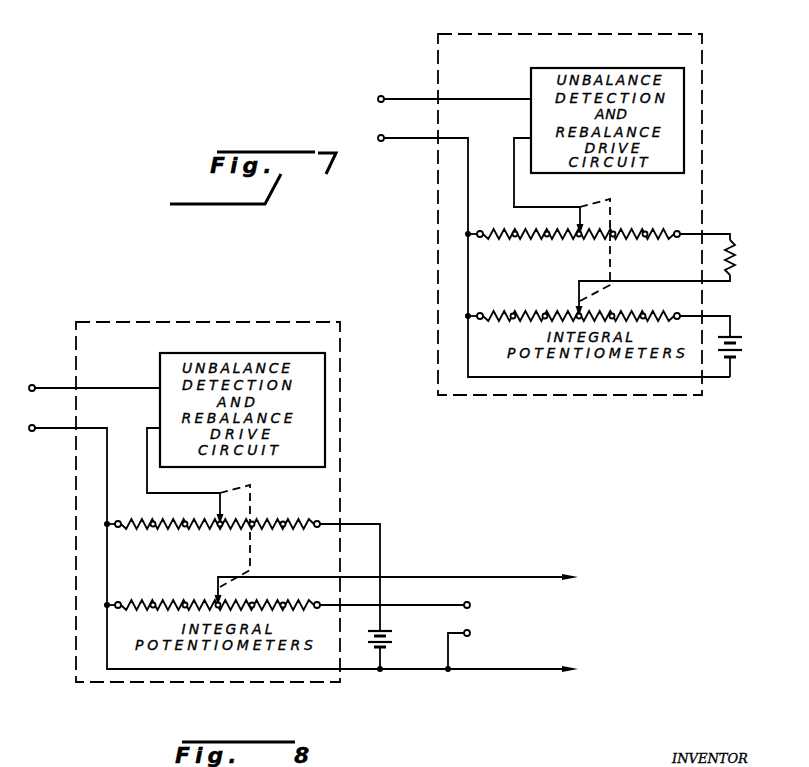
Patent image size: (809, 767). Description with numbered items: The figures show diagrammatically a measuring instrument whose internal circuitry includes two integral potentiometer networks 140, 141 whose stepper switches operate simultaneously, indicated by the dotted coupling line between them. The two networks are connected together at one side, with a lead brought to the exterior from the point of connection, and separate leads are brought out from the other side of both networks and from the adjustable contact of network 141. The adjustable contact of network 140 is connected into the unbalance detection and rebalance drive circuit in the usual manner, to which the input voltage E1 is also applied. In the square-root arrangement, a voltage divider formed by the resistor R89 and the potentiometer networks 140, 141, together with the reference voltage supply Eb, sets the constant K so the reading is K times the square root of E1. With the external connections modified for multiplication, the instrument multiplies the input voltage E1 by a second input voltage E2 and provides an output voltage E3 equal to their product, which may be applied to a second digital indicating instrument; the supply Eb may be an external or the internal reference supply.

In FIG. 7, the potentiometer network 140 is at (659, 226).
In FIG. 7, the potentiometer network 141 is at (527, 298).
In FIG. 7, the resistor R89 is at (678, 271).
In FIG. 7, the input voltage E1 is at (548, 236).
In FIG. 8, the input voltage E1 is at (292, 527).
In FIG. 8, the second input voltage E2 is at (410, 637).
In FIG. 8, the output voltage E3 is at (604, 606).
In FIG. 7, the reference voltage supply Eb is at (724, 346).
In FIG. 8, the reference voltage supply Eb is at (369, 598).